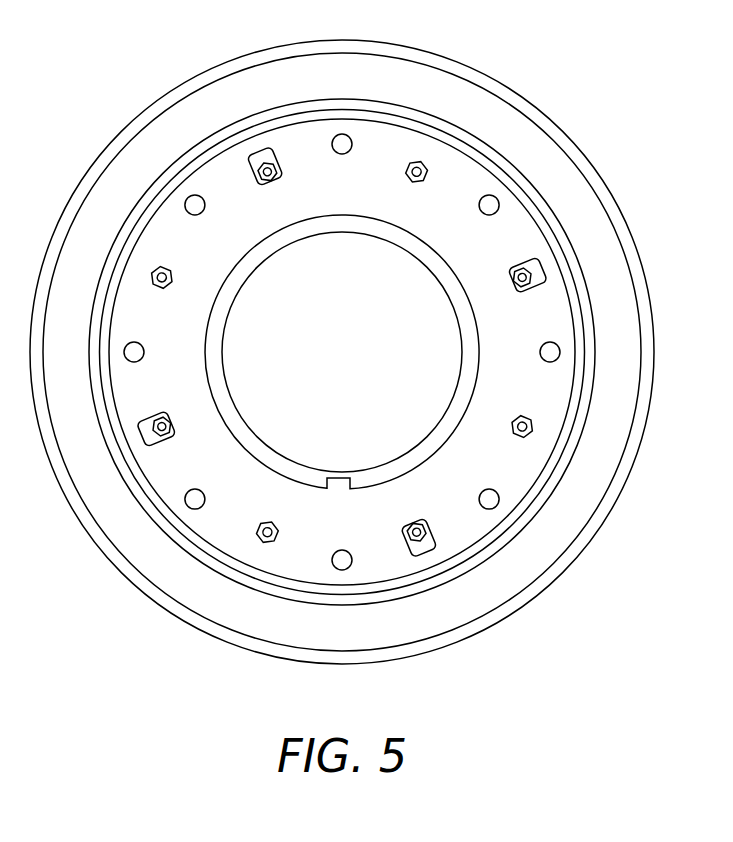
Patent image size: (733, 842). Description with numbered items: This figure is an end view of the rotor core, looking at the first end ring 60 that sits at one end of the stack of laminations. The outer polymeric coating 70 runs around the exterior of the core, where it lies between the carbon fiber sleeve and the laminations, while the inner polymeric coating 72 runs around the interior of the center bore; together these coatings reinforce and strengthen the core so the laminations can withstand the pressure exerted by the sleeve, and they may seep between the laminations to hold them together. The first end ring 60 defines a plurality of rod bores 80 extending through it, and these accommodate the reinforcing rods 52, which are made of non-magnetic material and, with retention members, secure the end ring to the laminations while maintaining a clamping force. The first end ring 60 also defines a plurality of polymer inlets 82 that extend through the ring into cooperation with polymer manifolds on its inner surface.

The reinforcing rods 52 is at (264, 162).
The first end ring 60 is at (353, 83).
The outer polymeric coating 70 is at (158, 105).
The inner polymeric coating 72 is at (322, 233).
The rod bores 80 is at (540, 262).
The polymer inlets 82 is at (490, 195).